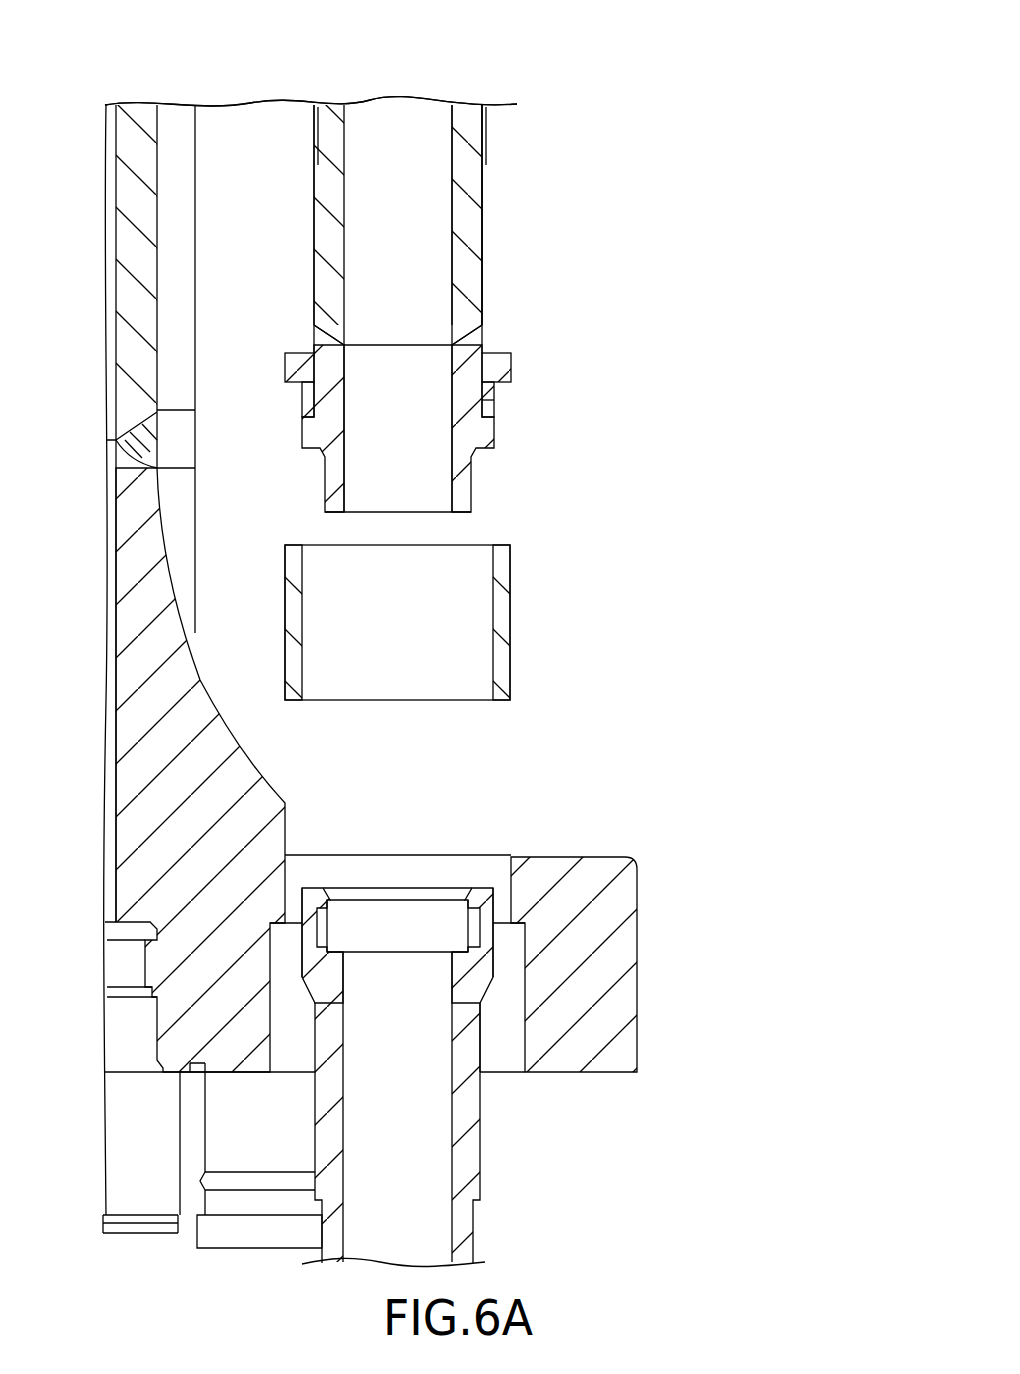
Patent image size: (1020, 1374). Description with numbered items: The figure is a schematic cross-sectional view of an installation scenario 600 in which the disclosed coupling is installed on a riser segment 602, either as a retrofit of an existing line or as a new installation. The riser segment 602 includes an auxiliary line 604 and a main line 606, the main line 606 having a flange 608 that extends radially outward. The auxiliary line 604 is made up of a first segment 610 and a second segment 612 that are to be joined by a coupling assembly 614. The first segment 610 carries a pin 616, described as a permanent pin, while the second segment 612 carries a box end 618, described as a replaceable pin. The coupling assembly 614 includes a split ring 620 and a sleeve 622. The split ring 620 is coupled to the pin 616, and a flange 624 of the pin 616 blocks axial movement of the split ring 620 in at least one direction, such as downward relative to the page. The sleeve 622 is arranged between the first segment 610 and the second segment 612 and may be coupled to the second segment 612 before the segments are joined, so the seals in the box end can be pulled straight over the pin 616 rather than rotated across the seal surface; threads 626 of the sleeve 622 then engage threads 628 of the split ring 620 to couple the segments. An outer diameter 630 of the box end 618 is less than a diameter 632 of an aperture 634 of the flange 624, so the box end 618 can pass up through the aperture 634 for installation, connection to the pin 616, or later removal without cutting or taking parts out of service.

The installation scenario 600 is at (655, 48).
The riser segment 602 is at (685, 186).
The auxiliary line 604 is at (473, 115).
The main line 606 is at (143, 118).
The flange 608 is at (628, 965).
The first segment 610 is at (470, 184).
The second segment 612 is at (467, 1223).
The coupling assembly 614 is at (478, 409).
The pin 616 is at (470, 365).
The box end 618 is at (485, 897).
The split ring 620 is at (505, 363).
The sleeve 622 is at (500, 690).
The flange of the pin 624 is at (482, 435).
The threads of the sleeve 626 is at (500, 407).
The threads of the split ring 628 is at (492, 388).
The outer diameter 630 is at (227, 907).
The diameter 632 is at (500, 855).
The aperture 634 is at (510, 1080).